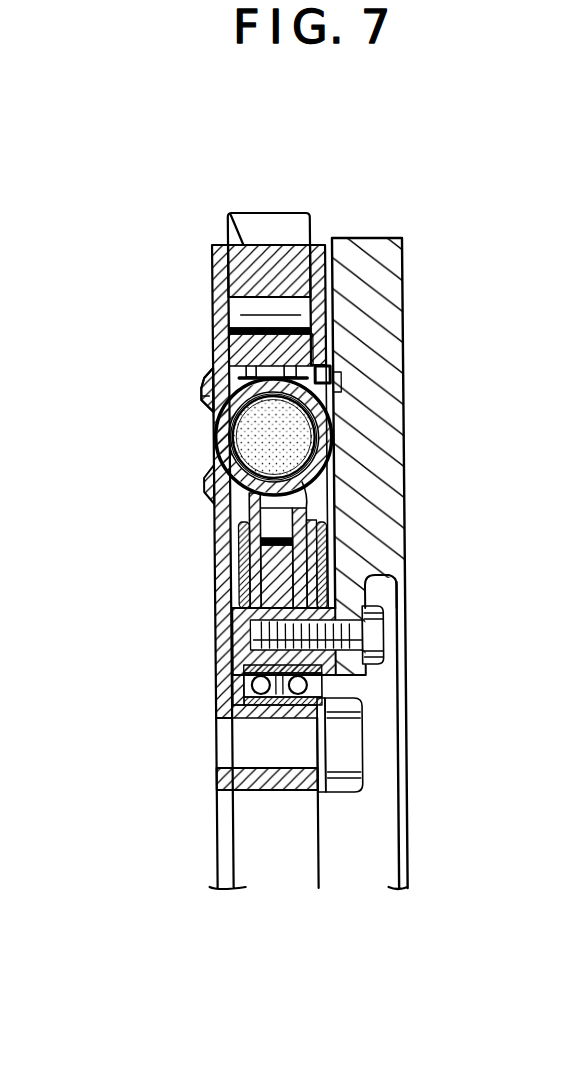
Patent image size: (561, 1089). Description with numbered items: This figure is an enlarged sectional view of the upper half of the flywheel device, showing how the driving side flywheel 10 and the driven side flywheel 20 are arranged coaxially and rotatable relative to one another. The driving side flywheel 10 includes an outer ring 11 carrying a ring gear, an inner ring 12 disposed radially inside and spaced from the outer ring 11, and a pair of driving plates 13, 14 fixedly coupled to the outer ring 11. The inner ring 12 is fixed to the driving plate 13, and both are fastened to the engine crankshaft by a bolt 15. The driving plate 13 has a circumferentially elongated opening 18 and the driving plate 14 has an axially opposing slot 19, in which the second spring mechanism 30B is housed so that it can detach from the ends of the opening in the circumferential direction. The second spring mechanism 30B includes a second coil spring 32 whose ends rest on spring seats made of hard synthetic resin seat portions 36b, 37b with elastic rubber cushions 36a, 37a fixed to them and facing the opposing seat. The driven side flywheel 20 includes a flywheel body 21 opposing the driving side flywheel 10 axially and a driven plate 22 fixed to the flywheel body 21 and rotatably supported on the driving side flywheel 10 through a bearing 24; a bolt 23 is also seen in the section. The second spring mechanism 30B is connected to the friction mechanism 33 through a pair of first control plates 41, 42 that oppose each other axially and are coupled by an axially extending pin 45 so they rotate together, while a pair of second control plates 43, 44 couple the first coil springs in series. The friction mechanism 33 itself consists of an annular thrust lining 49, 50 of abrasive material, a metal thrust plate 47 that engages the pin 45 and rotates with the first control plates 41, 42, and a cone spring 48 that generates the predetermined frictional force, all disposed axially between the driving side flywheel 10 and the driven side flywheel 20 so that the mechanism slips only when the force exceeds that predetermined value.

The driving side flywheel 10 is at (244, 206).
The outer ring 11 is at (238, 272).
The inner ring 12 is at (290, 778).
The driving plate 13 is at (215, 245).
The driving plate 14 is at (318, 243).
The bolt 15 is at (355, 740).
The opening 18 is at (206, 404).
The slot 19 is at (338, 382).
The driven side flywheel 20 is at (356, 238).
The flywheel body 21 is at (392, 255).
The driven plate 22 is at (258, 578).
The adjusting bolt 23 is at (375, 637).
The bearing 24 is at (302, 680).
The second spring mechanism 30B is at (325, 440).
The second coil spring 32 is at (330, 450).
The friction mechanism 33 is at (248, 568).
The cushion 36a is at (240, 440).
The cushion 37a is at (195, 438).
The seat portion 36b is at (205, 376).
The seat portion 37b is at (140, 390).
The first control plate 41 is at (246, 372).
The first control plate 42 is at (330, 373).
The second control plate 43 is at (238, 538).
The second control plate 44 is at (322, 548).
The pin 45 is at (210, 497).
The thrust plate 47 is at (302, 522).
The cone spring 48 is at (330, 570).
The thrust lining 49 is at (250, 606).
The thrust lining 50 is at (385, 590).